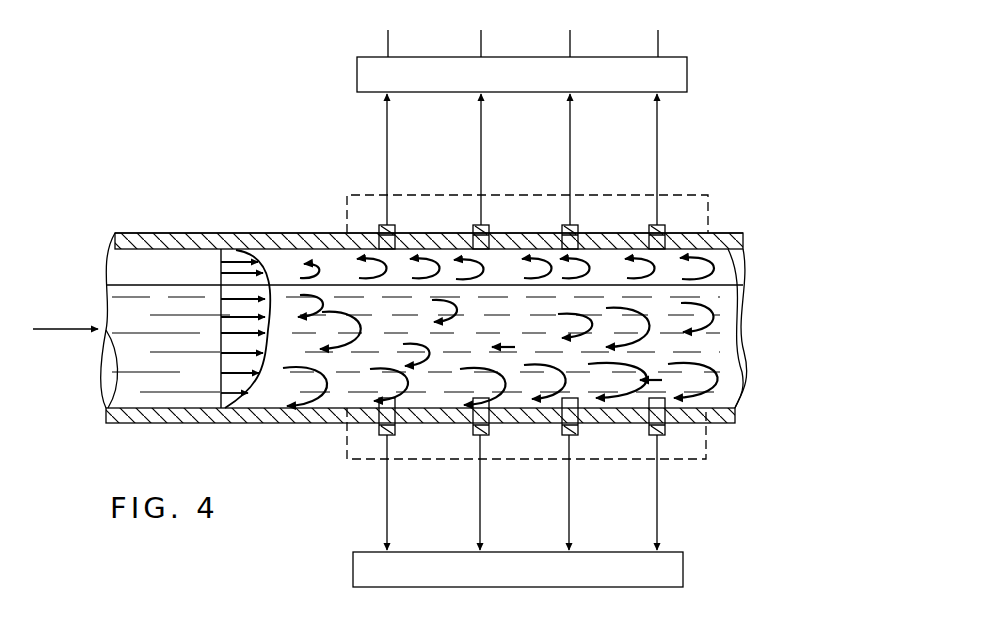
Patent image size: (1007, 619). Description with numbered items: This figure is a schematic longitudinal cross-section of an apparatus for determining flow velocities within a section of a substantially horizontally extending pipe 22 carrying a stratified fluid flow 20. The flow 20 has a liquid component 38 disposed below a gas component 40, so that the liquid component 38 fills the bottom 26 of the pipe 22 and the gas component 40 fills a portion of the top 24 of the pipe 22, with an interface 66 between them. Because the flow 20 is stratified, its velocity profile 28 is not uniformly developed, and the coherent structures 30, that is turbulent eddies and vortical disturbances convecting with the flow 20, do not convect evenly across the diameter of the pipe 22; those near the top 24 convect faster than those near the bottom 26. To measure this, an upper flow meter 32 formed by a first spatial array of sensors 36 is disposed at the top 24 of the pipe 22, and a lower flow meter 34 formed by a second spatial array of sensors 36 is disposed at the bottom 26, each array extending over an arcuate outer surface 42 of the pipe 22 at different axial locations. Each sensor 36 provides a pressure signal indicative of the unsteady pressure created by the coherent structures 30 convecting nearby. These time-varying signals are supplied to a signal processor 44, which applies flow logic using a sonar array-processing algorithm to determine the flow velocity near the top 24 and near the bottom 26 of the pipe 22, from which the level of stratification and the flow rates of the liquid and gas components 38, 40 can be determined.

The fluid flow 20 is at (62, 327).
The pipe 22 is at (424, 322).
The top portion of the pipe 24 is at (160, 250).
The bottom portion of the pipe 26 is at (170, 404).
The velocity profile 28 is at (258, 393).
The coherent structures 30 is at (730, 263).
The upper flow meter 32 is at (710, 198).
The lower flow meter 34 is at (706, 451).
The sensors 36 is at (392, 224).
The liquid component 38 is at (722, 348).
The gas component 40 is at (725, 280).
The arcuate outer surface 42 is at (300, 233).
The signal processor 44 is at (687, 78).
The interface 66 is at (183, 287).